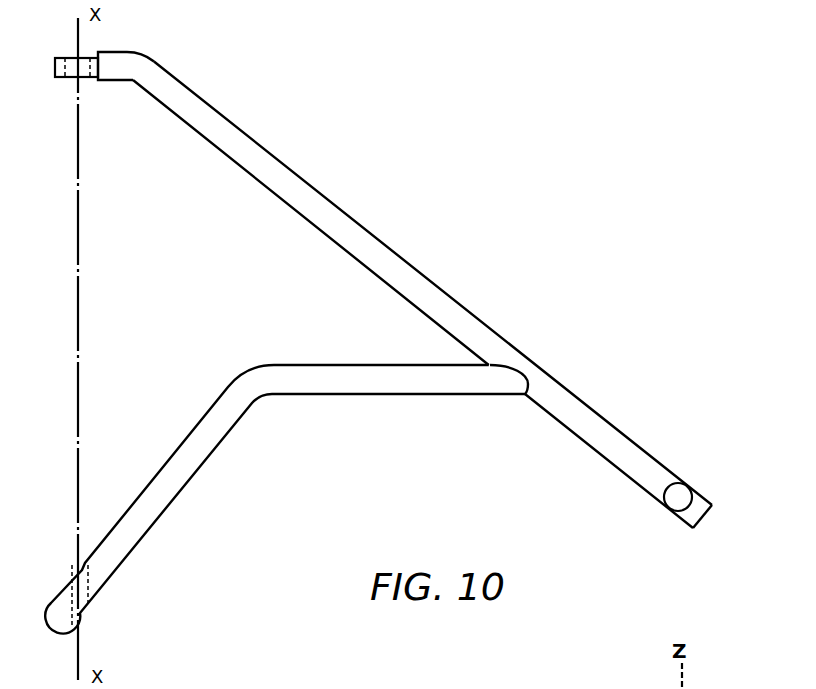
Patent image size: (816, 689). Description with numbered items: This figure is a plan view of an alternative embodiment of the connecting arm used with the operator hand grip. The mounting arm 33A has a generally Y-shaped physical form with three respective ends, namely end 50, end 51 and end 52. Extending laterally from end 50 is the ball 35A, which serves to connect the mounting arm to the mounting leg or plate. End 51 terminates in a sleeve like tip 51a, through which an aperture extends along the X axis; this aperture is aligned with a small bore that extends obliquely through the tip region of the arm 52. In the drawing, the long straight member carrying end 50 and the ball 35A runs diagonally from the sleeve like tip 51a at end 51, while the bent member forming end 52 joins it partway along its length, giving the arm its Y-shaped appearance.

The mounting arm 33A is at (322, 213).
The end 50 is at (653, 475).
The ball 35A is at (677, 498).
The end 51 is at (115, 63).
The sleeve like tip 51a is at (73, 72).
The end 52 is at (95, 587).